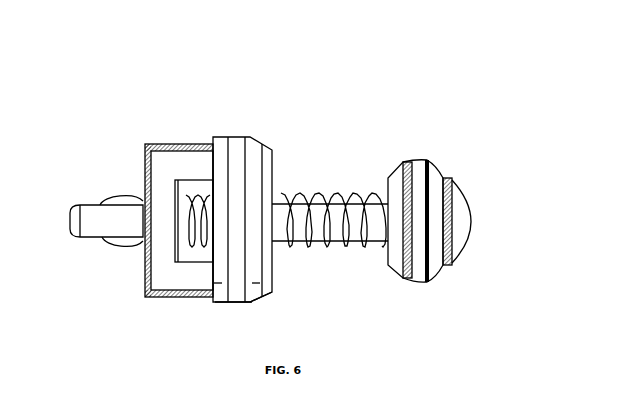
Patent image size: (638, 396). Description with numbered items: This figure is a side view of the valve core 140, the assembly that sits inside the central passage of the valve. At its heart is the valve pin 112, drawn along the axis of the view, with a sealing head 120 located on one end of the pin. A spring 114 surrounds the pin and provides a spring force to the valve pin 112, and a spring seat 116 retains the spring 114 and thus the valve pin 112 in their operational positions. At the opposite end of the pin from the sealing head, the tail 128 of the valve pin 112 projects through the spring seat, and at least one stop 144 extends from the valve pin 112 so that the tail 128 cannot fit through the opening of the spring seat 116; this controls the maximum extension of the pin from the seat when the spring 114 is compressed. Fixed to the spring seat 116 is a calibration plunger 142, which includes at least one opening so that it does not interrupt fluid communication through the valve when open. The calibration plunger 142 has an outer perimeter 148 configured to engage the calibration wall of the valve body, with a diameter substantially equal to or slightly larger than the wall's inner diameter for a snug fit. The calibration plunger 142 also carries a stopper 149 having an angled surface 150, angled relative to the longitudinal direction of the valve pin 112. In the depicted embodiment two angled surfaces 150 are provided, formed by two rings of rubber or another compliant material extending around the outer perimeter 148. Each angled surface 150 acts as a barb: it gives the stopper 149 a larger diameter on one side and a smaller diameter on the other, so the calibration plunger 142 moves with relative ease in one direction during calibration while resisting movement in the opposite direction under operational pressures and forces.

The valve core 140 is at (245, 87).
The valve pin 112 is at (337, 218).
The spring 114 is at (376, 195).
The spring seat 116 is at (159, 192).
The sealing head 120 is at (445, 160).
The tail 128 is at (90, 217).
The calibration plunger 142 is at (233, 140).
The stop 144 is at (118, 239).
The outer perimeter 148 is at (271, 296).
The stopper 149 is at (256, 283).
The angled surface 150 is at (252, 303).